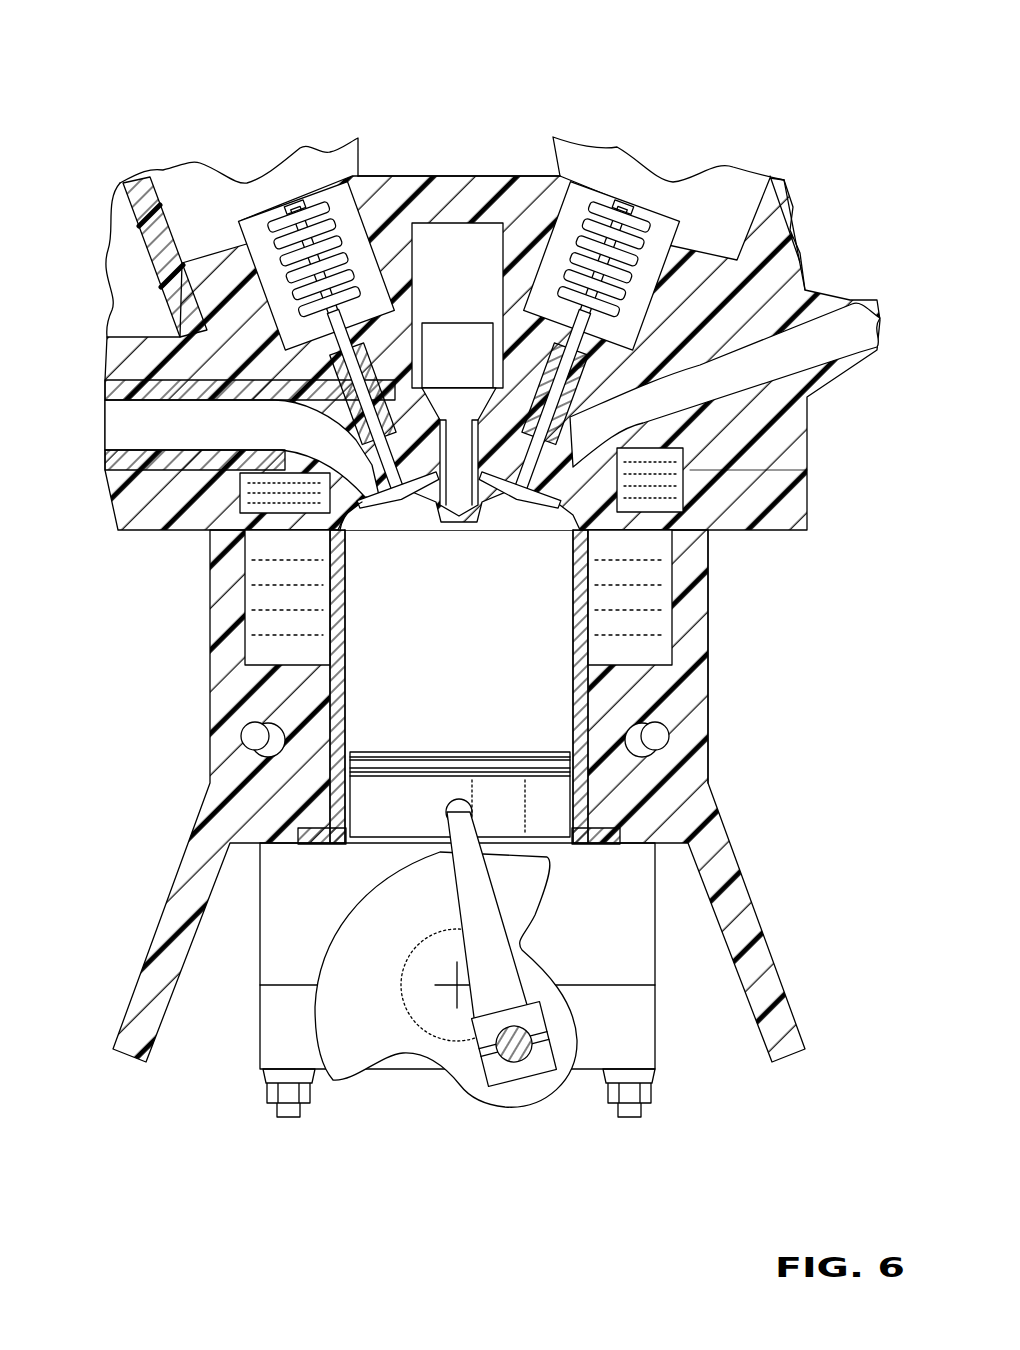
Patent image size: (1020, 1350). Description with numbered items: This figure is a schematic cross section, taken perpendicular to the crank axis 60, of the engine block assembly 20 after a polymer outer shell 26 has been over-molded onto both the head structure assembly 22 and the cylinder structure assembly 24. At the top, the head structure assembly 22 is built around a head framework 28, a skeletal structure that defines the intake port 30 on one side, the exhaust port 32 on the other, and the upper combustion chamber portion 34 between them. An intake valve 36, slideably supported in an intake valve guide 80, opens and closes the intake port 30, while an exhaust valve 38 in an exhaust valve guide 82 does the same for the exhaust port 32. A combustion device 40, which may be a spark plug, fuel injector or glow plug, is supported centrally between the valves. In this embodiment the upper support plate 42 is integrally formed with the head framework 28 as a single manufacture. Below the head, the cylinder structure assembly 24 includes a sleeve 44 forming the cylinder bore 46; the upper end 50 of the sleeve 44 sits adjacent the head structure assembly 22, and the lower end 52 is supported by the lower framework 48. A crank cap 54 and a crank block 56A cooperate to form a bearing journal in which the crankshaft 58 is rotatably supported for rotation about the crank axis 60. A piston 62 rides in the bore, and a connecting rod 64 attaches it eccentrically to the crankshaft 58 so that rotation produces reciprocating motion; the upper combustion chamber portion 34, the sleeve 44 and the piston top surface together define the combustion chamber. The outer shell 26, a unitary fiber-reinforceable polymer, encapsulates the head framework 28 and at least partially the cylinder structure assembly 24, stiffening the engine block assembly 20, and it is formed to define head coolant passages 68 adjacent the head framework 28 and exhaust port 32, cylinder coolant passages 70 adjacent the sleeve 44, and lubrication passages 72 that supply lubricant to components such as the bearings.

The engine block assembly 20 is at (580, 75).
The head structure assembly 22 is at (183, 372).
The cylinder structure assembly 24 is at (600, 705).
The outer shell 26 is at (708, 632).
The head framework 28 is at (517, 345).
The intake port 30 is at (118, 417).
The exhaust port 32 is at (823, 332).
The upper combustion chamber portion 34 is at (497, 517).
The intake valve 36 is at (402, 498).
The exhaust valve 38 is at (517, 502).
The combustion device 40 is at (452, 335).
The upper support plate 42 is at (690, 512).
The sleeve 44 is at (575, 700).
The cylinder bore 46 is at (575, 622).
The lower framework 48 is at (330, 845).
The upper end 50 is at (352, 515).
The lower end 52 is at (355, 828).
The crank cap 54 is at (645, 1042).
The crank block 56A is at (640, 925).
The crankshaft 58 is at (510, 1105).
The crank axis 60 is at (455, 985).
The piston 62 is at (498, 798).
The connecting rod 64 is at (470, 872).
The head coolant passage 68 is at (283, 490).
The cylinder coolant passage 70 is at (270, 592).
The lubrication passage 72 is at (255, 748).
The intake valve guide 80 is at (228, 335).
The exhaust valve guide 82 is at (792, 280).